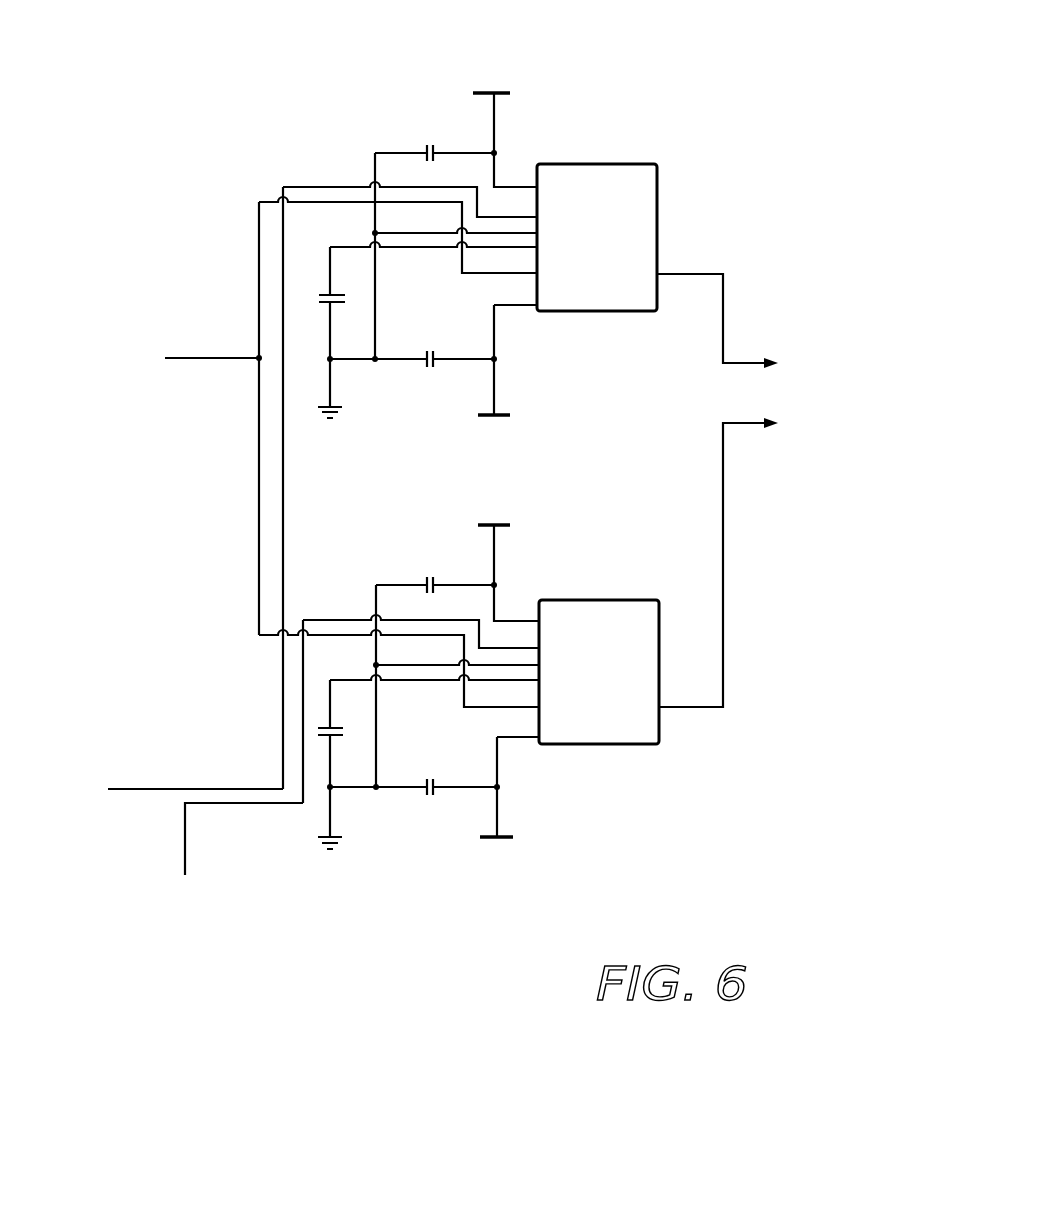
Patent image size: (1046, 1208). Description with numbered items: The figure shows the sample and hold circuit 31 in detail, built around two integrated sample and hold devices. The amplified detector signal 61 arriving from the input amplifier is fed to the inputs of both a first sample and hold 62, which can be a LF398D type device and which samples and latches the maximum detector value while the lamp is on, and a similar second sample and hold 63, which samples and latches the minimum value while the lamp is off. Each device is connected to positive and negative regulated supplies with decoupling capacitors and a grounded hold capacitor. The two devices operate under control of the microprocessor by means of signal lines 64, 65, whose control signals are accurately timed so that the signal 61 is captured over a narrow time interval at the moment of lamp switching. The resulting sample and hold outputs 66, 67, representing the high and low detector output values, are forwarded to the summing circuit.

The sample and hold circuit 31 is at (760, 114).
The signal 61 is at (195, 357).
The sample and hold 62 is at (592, 164).
The sample and hold 63 is at (618, 600).
The signal line 64 is at (150, 789).
The signal line 65 is at (185, 835).
The sample and hold output 66 is at (723, 330).
The sample and hold output 67 is at (723, 458).